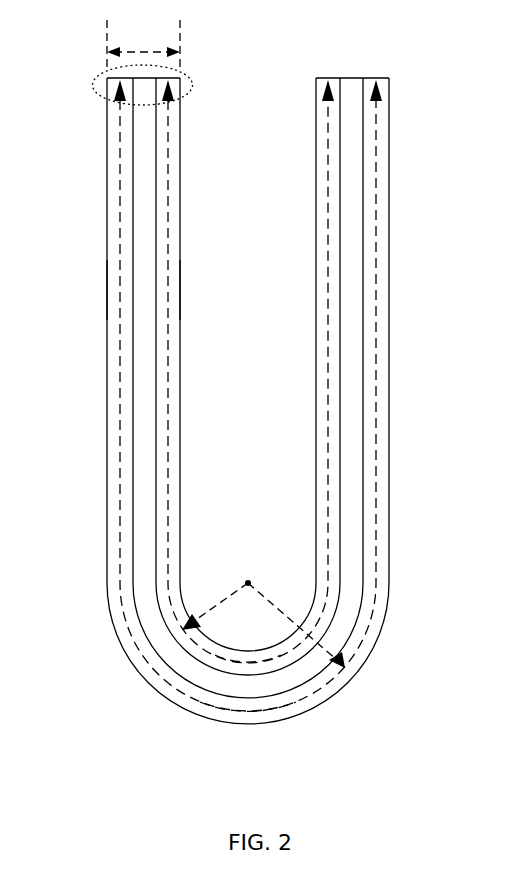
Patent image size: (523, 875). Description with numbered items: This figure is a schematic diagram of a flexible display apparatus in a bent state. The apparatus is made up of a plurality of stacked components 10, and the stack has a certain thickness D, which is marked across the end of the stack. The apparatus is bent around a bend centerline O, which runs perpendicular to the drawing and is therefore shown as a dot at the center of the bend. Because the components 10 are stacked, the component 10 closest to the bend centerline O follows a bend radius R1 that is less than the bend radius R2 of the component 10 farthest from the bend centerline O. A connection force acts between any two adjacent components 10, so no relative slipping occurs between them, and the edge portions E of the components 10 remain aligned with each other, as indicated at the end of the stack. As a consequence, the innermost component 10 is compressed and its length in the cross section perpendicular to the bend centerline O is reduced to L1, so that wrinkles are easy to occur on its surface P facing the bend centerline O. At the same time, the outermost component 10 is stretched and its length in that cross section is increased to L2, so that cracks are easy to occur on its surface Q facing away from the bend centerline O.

The component 10 is at (323, 118).
The edge portion E is at (97, 74).
The thickness D is at (143, 45).
The surface away from the bend centerline Q is at (107, 286).
The surface close to the bend centerline P is at (180, 292).
The bend centerline O is at (254, 572).
The bend radius of the closest component R1 is at (215, 606).
The bend radius of the farthest component R2 is at (296, 625).
The reduced length of the closest component L1 is at (228, 662).
The increased length of the farthest component L2 is at (239, 712).